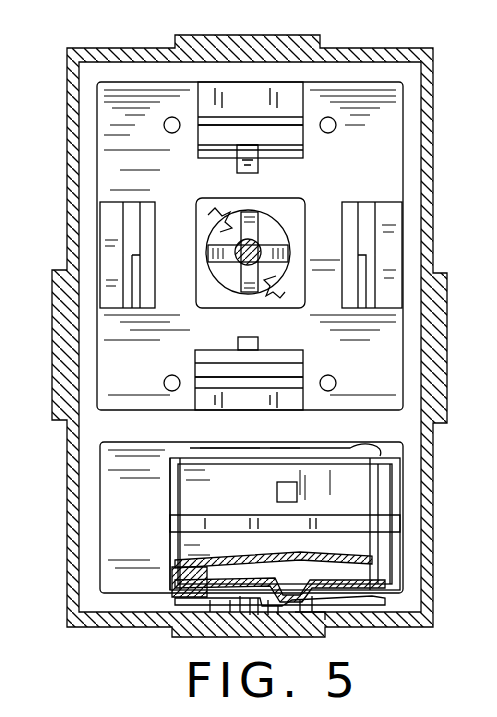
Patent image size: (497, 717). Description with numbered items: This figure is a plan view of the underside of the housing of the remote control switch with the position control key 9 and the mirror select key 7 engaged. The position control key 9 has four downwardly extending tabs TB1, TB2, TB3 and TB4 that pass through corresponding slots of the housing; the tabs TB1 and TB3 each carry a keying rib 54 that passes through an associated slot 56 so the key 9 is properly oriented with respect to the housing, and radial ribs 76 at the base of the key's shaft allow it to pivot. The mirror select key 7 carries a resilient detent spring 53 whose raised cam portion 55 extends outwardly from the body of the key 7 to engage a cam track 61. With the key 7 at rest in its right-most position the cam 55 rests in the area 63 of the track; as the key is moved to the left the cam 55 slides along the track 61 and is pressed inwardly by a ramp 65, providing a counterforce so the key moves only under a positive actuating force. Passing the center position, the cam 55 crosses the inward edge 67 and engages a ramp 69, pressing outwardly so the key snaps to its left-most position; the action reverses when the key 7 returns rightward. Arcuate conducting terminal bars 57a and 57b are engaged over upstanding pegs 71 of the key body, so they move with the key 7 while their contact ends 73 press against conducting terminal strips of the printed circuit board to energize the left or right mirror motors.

The downwardly extending tab TB1 is at (216, 130).
The downwardly extending tab TB2 is at (132, 236).
The downwardly extending tab TB3 is at (200, 376).
The downwardly extending tab TB4 is at (358, 200).
The keying rib 54 is at (252, 140).
The slot 56 is at (238, 170).
The position control key 9 is at (215, 225).
The radial ribs 76 is at (262, 240).
The mirror select key 7 is at (386, 446).
The contact ends 73 is at (186, 482).
The upstanding pegs 71 is at (264, 512).
The raised cam portion 55 is at (292, 572).
The conducting terminal bar 57a is at (178, 580).
The conducting terminal bar 57b is at (175, 462).
The cam track 61 is at (165, 620).
The cam track area 63 is at (320, 605).
The ramp 65 is at (272, 618).
The inward edge 67 is at (256, 618).
The ramp 69 is at (225, 636).
The detent spring 53 is at (370, 580).